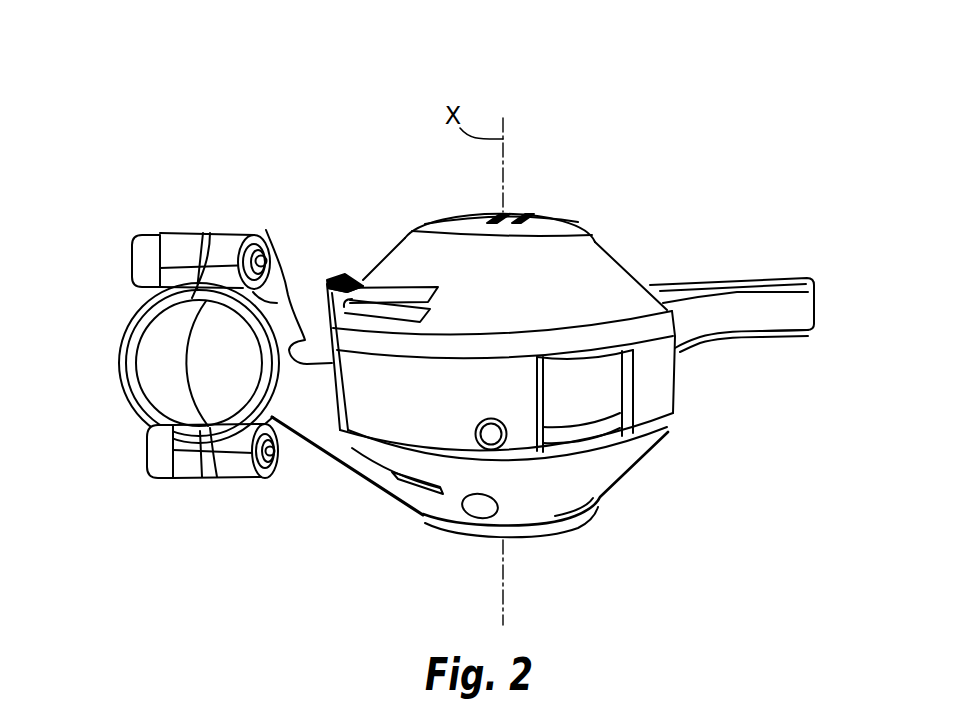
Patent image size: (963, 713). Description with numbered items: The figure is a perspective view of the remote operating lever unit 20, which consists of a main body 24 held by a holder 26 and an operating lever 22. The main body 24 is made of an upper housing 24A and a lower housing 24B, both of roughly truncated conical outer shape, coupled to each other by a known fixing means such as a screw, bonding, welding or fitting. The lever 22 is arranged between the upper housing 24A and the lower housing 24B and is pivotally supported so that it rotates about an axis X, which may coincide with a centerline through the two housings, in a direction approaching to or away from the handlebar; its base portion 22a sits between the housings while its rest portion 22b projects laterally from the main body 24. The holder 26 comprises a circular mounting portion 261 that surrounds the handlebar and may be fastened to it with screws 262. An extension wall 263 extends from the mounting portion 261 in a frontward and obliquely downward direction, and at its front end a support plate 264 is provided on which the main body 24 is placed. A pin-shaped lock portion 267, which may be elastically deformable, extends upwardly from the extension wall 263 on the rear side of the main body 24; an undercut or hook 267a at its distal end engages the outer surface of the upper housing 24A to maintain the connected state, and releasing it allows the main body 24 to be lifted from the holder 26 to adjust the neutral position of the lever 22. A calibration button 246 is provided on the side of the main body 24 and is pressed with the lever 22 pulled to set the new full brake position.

The remote operating lever unit 20 is at (544, 129).
The lever 22 is at (760, 267).
The base portion 22a is at (647, 410).
The rest portion 22b is at (723, 320).
The main body 24 is at (568, 205).
The upper housing 24A is at (605, 256).
The lower housing 24B is at (607, 480).
The holder 26 is at (319, 464).
The calibration button 246 is at (490, 440).
The mounting portion 261 is at (266, 230).
The screws 262 is at (148, 237).
The extension wall 263 is at (350, 467).
The support plate 264 is at (567, 531).
The lock portion 267 is at (348, 273).
The hook 267a is at (342, 278).